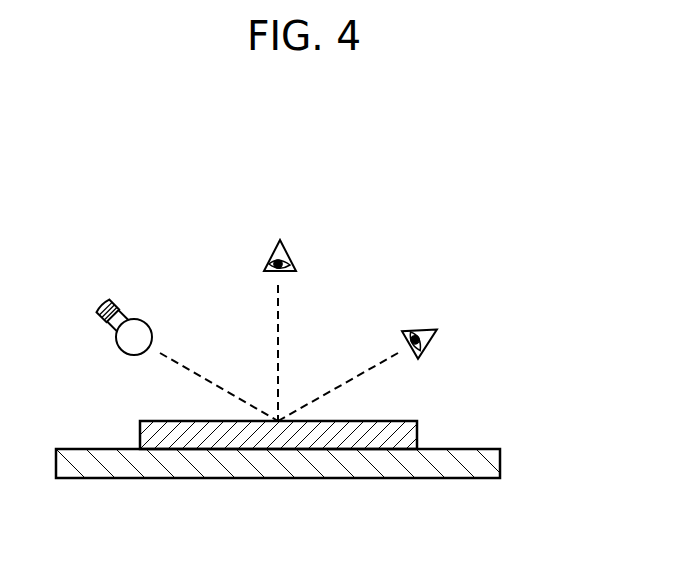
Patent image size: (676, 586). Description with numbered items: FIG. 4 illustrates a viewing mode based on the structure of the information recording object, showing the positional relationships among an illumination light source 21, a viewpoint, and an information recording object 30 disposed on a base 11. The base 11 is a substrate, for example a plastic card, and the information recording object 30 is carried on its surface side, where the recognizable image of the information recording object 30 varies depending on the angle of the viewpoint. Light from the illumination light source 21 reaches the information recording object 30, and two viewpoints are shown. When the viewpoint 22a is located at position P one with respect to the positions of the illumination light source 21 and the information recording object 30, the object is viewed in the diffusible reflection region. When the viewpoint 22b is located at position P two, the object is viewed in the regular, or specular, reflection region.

The base 11 is at (493, 462).
The information recording object 30 is at (405, 435).
The illumination light source 21 is at (117, 345).
The viewpoint 22a is at (292, 253).
The viewpoint 22b is at (424, 342).